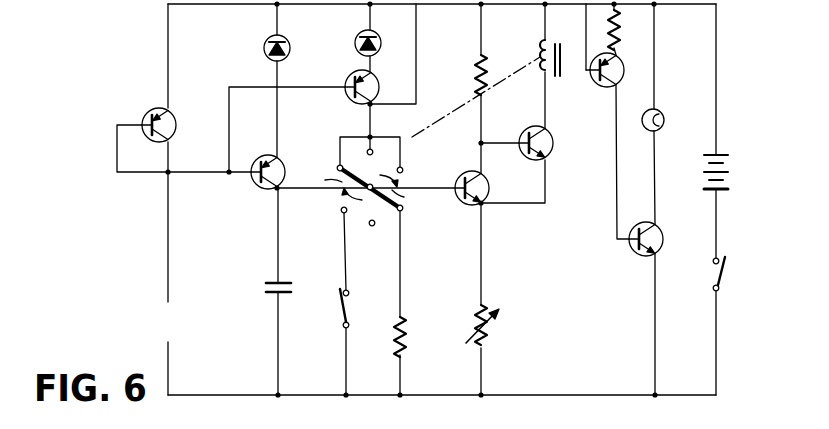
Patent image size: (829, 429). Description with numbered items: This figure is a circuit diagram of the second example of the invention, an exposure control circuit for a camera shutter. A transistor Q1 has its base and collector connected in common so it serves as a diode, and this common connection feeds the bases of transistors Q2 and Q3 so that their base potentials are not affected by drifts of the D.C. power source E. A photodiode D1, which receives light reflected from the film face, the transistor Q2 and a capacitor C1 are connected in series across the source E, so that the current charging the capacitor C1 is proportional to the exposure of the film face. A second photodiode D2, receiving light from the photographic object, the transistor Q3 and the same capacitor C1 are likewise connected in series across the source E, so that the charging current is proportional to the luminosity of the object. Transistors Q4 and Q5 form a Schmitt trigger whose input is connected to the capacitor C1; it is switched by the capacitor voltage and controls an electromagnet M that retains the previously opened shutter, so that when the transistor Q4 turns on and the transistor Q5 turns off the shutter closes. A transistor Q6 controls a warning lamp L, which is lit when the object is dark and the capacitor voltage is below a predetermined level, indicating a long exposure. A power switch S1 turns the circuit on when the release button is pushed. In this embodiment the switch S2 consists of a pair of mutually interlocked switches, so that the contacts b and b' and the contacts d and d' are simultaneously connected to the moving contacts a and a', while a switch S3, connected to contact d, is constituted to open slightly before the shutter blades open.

The transistor Q1 is at (171, 125).
The transistor Q2 is at (280, 170).
The transistor Q3 is at (374, 86).
The transistor Q4 is at (484, 188).
The transistor Q5 is at (548, 144).
The transistor Q6 is at (619, 69).
The photodiode D1 is at (290, 48).
The photodiode D2 is at (381, 43).
The capacitor C1 is at (268, 292).
The electromagnet M is at (553, 71).
The warning lamp L is at (659, 117).
The D.C. power source E is at (722, 172).
The power switch S1 is at (728, 274).
The switch S2 is at (373, 184).
The switch S3 is at (334, 308).